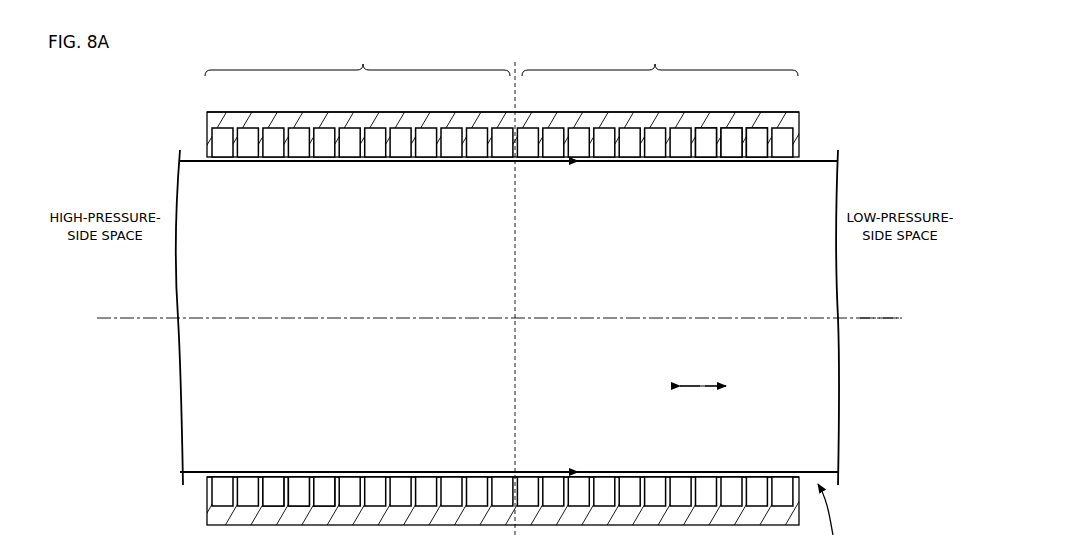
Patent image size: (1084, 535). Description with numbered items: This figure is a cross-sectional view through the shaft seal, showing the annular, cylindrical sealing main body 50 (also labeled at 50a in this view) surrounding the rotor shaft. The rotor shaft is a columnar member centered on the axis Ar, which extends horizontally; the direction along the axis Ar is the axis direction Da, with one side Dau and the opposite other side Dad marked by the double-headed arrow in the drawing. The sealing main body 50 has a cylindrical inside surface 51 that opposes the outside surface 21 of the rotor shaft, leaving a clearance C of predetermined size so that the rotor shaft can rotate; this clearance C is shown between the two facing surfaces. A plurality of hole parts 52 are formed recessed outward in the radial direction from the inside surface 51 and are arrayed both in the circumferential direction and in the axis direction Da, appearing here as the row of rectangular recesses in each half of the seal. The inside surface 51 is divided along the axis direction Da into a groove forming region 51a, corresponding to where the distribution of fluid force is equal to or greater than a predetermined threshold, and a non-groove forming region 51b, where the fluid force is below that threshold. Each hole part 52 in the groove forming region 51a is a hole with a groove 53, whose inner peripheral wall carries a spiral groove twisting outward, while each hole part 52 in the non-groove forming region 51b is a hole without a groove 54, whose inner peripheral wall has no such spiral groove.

The outside surface 21 is at (830, 186).
The sealing main body 50 is at (810, 126).
The outer surface of seal ring 50a is at (697, 113).
The inside surface 51 is at (418, 472).
The groove forming region 51a is at (357, 58).
The non-groove forming region 51b is at (660, 58).
The hole parts 52 is at (755, 166).
The hole with a groove 53 is at (306, 451).
The hole without a groove 54 is at (732, 188).
The clearance C is at (335, 163).
The axis Ar is at (885, 318).
The axis direction Da is at (700, 390).
The one side Dau is at (665, 386).
The other side Dad is at (739, 386).